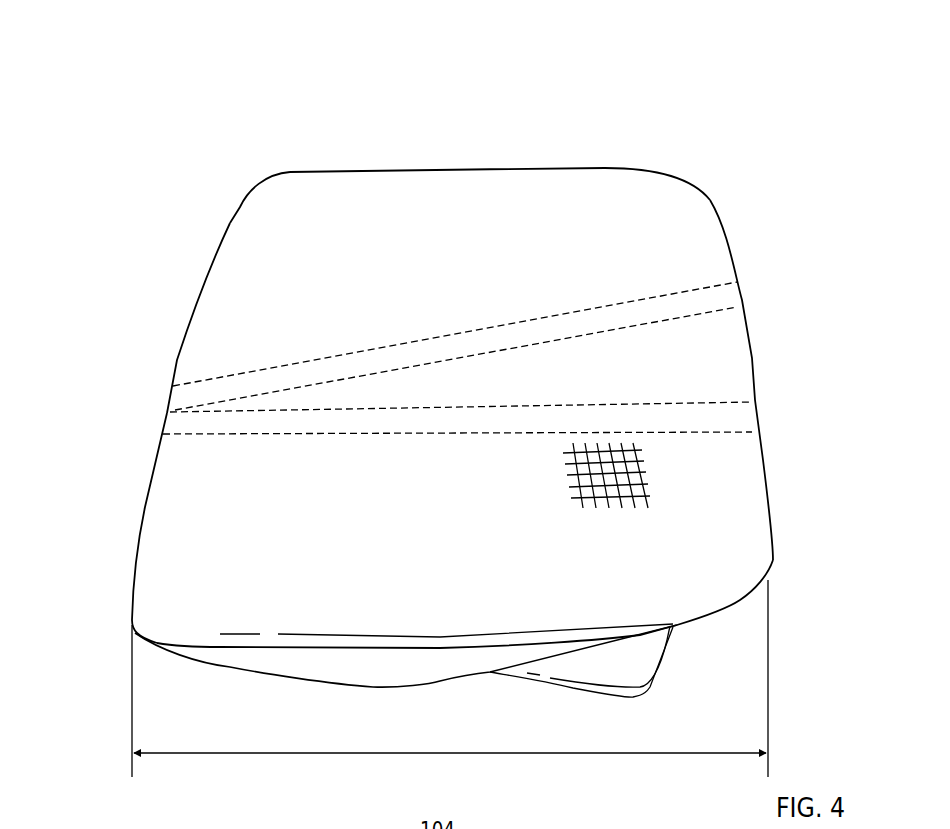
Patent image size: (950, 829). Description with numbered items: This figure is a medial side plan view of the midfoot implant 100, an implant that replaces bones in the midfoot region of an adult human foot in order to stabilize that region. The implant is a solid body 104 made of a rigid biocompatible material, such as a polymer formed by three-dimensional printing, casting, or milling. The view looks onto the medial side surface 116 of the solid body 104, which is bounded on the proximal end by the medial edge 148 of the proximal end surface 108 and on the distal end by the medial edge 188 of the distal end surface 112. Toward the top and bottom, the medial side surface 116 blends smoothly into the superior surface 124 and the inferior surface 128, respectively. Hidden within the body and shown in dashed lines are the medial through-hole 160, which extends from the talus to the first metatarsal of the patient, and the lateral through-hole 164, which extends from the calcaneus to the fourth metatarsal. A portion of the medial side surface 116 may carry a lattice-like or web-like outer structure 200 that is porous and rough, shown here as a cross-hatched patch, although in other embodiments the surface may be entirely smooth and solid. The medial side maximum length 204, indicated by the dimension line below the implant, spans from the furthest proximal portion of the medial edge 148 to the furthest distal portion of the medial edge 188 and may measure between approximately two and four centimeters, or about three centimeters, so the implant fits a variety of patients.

The midfoot implant 100 is at (446, 406).
The solid body 104 is at (253, 223).
The proximal end surface 108 is at (754, 358).
The distal end surface 112 is at (166, 398).
The medial side surface 116 is at (225, 523).
The superior surface 124 is at (606, 166).
The inferior surface 128 is at (483, 680).
The medial edge 148 is at (765, 462).
The medial through-hole 160 is at (303, 436).
The lateral through-hole 164 is at (356, 354).
The medial edge 188 is at (150, 479).
The lattice-like or web-like outer structure 200 is at (659, 495).
The medial side maximum length 204 is at (688, 754).